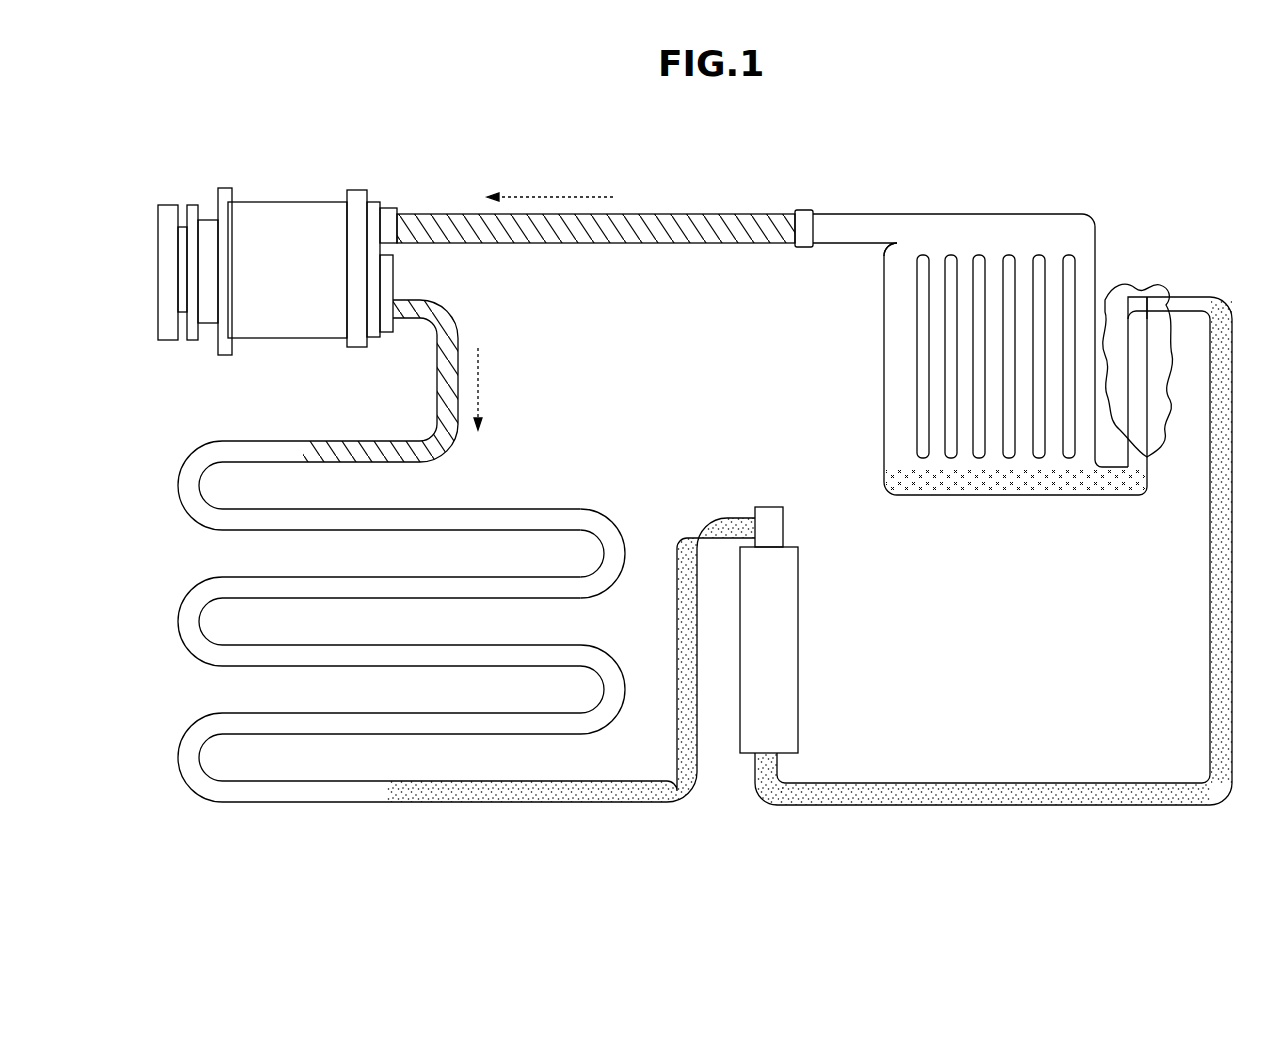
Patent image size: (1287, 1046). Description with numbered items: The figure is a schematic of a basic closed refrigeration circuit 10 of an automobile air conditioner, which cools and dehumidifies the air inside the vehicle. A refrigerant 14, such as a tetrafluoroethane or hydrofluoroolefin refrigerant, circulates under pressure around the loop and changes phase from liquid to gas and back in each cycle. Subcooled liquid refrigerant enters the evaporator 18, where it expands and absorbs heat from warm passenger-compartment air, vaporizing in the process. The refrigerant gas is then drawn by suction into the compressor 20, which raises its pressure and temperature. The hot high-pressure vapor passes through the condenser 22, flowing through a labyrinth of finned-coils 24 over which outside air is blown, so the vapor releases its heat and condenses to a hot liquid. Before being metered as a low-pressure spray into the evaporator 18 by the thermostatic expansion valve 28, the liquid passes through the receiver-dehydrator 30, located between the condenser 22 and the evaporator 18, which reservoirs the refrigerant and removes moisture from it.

The closed refrigeration circuit 10 is at (1107, 806).
The refrigerant 14 is at (657, 214).
The evaporator unit 18 is at (897, 406).
The compressor 20 is at (275, 202).
The condenser 22 is at (358, 803).
The finned-coils 24 is at (565, 509).
The thermostatic expansion valve 28 is at (1160, 288).
The receiver-dehydrator 30 is at (790, 613).